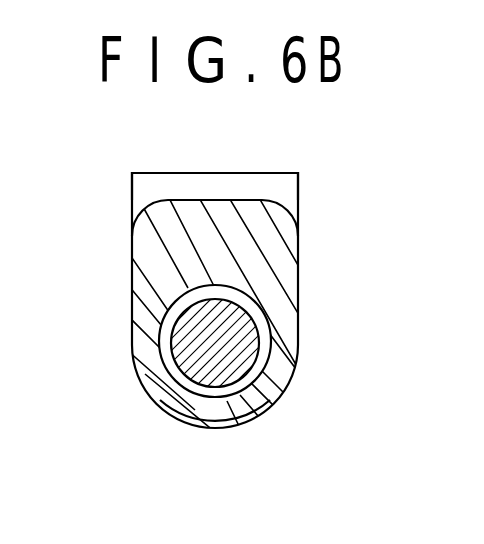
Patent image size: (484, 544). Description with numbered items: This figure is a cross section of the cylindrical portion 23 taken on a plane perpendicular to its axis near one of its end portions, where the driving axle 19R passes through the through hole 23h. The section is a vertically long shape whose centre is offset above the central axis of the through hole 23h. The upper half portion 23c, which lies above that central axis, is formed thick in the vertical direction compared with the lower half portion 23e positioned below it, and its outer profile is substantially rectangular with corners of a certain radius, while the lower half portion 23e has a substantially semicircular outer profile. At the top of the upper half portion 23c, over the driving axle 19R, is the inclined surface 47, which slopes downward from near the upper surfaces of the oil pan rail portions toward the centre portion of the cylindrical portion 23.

The cylindrical portion 23 is at (300, 273).
The upper half portion 23c is at (162, 236).
The lower half portion 23e is at (223, 412).
The through hole 23h is at (171, 313).
The inclined surface 47 is at (252, 192).
The driving axle 19R is at (248, 358).